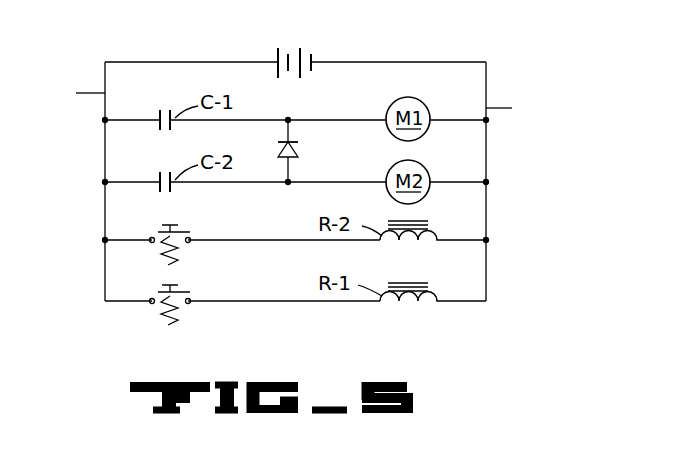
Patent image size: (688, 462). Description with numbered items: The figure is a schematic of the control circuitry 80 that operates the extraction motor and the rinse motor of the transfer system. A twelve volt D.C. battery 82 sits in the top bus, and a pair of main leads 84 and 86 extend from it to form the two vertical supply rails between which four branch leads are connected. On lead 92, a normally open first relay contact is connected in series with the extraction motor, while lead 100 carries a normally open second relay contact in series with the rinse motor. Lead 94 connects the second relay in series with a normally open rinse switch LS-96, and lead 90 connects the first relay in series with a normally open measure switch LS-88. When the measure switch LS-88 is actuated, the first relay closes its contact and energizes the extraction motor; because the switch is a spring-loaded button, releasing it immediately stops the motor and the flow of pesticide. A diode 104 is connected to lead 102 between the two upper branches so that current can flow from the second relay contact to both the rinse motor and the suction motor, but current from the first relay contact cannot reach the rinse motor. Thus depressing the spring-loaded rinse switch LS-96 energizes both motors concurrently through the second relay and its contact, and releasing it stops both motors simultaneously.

The control circuitry 80 is at (518, 76).
The battery 82 is at (302, 53).
The main lead 84 is at (71, 93).
The main lead 86 is at (515, 108).
The measure switch LS- 88 is at (188, 292).
The lead 90 is at (127, 298).
The lead 92 is at (133, 107).
The lead 94 is at (127, 238).
The rinse switch LS- 96 is at (186, 232).
The lead 100 is at (127, 178).
The lead 102 is at (291, 170).
The diode 104 is at (300, 143).